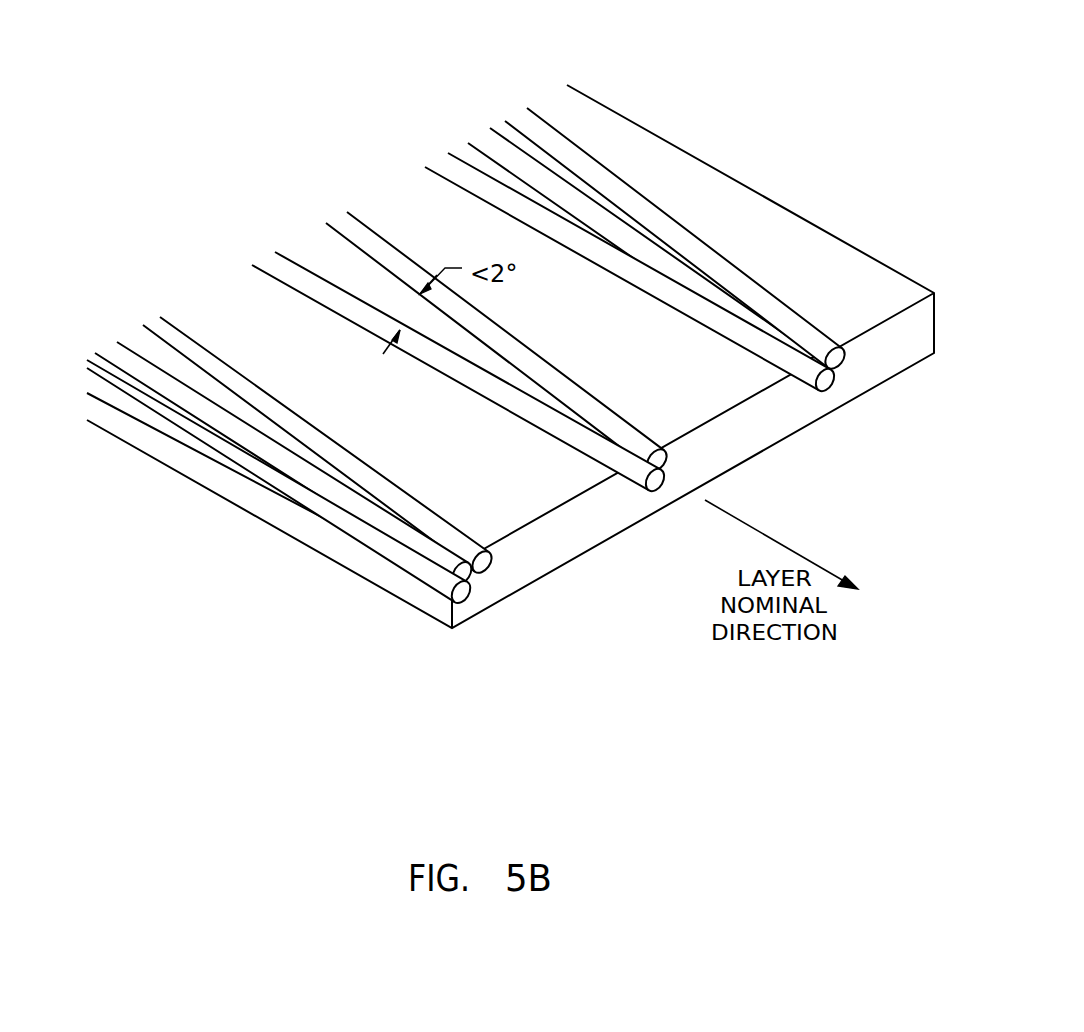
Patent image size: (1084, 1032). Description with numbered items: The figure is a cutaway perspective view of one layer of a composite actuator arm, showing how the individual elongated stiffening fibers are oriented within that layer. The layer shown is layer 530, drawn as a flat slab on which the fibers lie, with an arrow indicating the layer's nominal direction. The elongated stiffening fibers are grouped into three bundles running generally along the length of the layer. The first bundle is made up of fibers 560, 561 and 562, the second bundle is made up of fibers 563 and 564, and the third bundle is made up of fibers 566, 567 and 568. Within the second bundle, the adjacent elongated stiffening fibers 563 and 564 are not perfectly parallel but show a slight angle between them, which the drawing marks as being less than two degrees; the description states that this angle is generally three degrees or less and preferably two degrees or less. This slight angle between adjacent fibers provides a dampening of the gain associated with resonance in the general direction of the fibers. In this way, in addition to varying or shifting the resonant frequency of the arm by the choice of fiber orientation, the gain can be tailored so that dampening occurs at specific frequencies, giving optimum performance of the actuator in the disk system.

The layer 530 is at (748, 184).
The fiber 560 is at (438, 558).
The fiber 561 is at (477, 596).
The fiber 562 is at (490, 553).
The elongated stiffening fiber 563 is at (532, 353).
The elongated stiffening fiber 564 is at (634, 483).
The fiber 566 is at (726, 313).
The fiber 567 is at (838, 383).
The fiber 568 is at (760, 286).